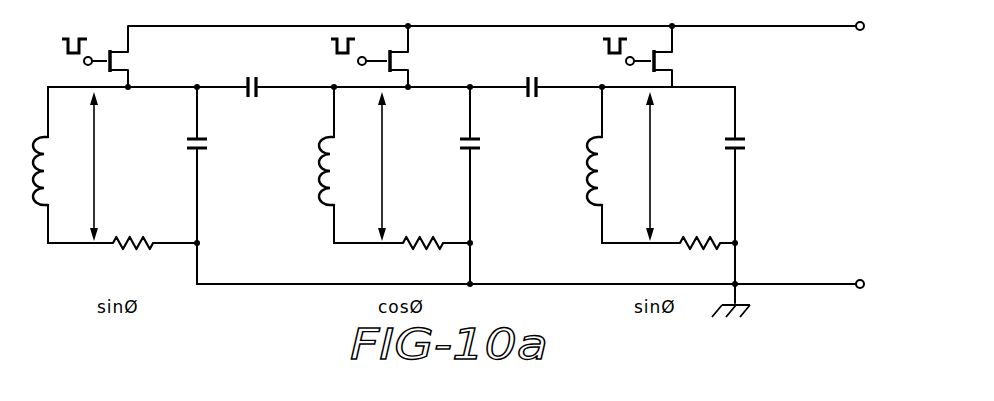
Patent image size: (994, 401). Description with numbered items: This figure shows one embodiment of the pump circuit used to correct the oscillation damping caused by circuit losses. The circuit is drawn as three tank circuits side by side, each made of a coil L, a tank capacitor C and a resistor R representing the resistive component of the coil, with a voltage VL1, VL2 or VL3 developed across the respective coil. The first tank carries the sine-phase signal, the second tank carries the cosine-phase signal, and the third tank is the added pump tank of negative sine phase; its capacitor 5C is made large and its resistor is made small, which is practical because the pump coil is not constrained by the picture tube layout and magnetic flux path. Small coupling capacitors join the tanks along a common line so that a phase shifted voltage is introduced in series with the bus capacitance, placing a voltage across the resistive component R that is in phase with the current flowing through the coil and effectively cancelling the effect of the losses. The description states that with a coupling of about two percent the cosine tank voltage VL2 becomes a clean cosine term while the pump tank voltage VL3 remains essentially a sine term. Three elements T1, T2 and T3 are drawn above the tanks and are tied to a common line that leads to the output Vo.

The first switching transistor T1 is at (86, 56).
The second switching transistor T2 is at (360, 56).
The third switching transistor T3 is at (628, 56).
The coil L is at (175, 171).
The tank capacitor C is at (341, 146).
The pump tank capacitor 5C is at (749, 146).
The coil resistance R is at (278, 255).
The inductor voltage VL1 is at (93, 166).
The cosine tank voltage VL2 is at (381, 166).
The pump tank voltage VL3 is at (647, 166).
The output voltage Vo is at (877, 37).